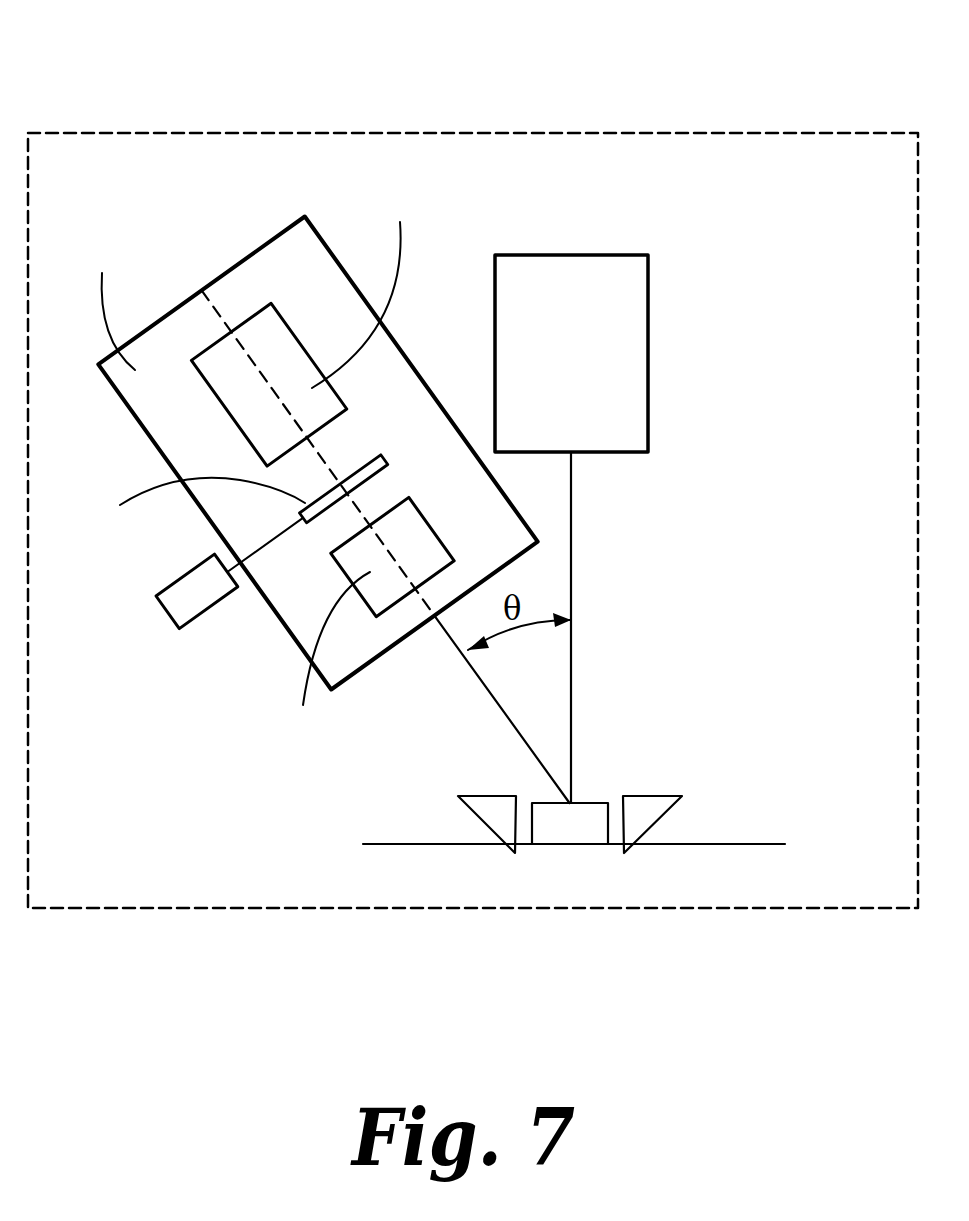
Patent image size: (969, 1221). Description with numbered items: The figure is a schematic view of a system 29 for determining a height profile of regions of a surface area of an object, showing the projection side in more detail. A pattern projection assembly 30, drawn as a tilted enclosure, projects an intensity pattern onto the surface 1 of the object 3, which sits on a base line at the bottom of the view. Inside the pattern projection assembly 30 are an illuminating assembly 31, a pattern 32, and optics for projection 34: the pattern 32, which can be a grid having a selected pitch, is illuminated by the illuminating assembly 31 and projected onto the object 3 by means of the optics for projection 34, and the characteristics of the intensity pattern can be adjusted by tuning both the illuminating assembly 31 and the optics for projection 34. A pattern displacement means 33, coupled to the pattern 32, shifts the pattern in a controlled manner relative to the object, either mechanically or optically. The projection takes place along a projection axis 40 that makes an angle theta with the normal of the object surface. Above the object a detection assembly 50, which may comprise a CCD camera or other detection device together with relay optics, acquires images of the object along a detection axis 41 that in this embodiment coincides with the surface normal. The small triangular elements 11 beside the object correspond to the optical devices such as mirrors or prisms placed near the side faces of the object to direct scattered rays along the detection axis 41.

The system 29 is at (622, 133).
The pattern projection assembly 30 is at (238, 285).
The illuminating assembly 31 is at (280, 347).
The pattern 32 is at (382, 455).
The pattern displacement means 33 is at (183, 598).
The optics for projection 34 is at (423, 533).
The projection axis 40 is at (517, 730).
The detection axis 41 is at (572, 668).
The detection assembly 50 is at (635, 273).
The surface 1 is at (590, 800).
The object 3 is at (570, 825).
The side elements 11 is at (493, 813).